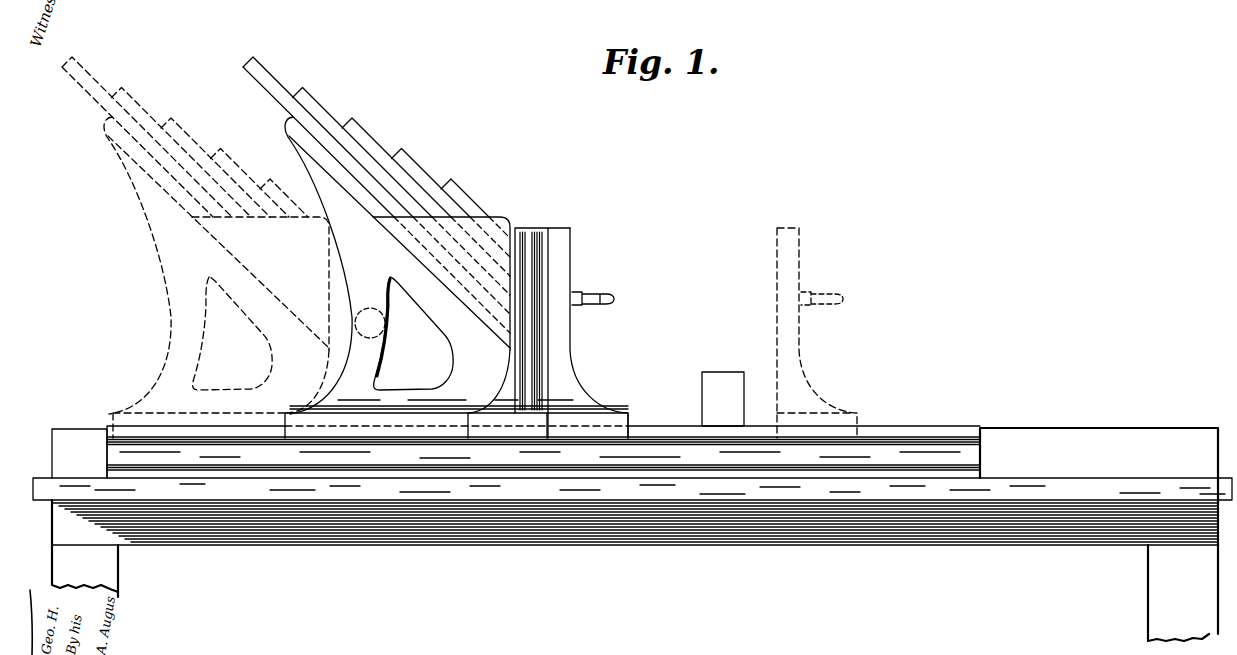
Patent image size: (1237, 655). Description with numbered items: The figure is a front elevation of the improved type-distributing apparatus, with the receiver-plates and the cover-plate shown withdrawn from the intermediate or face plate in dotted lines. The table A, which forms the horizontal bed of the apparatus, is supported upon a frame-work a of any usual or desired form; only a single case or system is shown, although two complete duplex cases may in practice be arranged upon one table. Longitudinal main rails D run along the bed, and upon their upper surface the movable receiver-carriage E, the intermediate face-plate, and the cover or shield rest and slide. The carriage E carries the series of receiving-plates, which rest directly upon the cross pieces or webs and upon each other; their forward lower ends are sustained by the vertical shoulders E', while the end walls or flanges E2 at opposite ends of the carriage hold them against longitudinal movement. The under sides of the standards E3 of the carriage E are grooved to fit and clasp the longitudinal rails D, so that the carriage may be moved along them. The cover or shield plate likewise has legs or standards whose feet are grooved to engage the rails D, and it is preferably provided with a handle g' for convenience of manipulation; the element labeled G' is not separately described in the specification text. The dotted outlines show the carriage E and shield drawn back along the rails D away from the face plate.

The table A is at (632, 534).
The frame-work a is at (635, 524).
The main rails D is at (595, 465).
The receiver-carriage E is at (286, 235).
The vertical shoulders E' is at (542, 319).
The end walls or flanges E2 is at (506, 215).
The standards E3 is at (438, 437).
The block G' is at (713, 333).
The handle g' is at (707, 292).